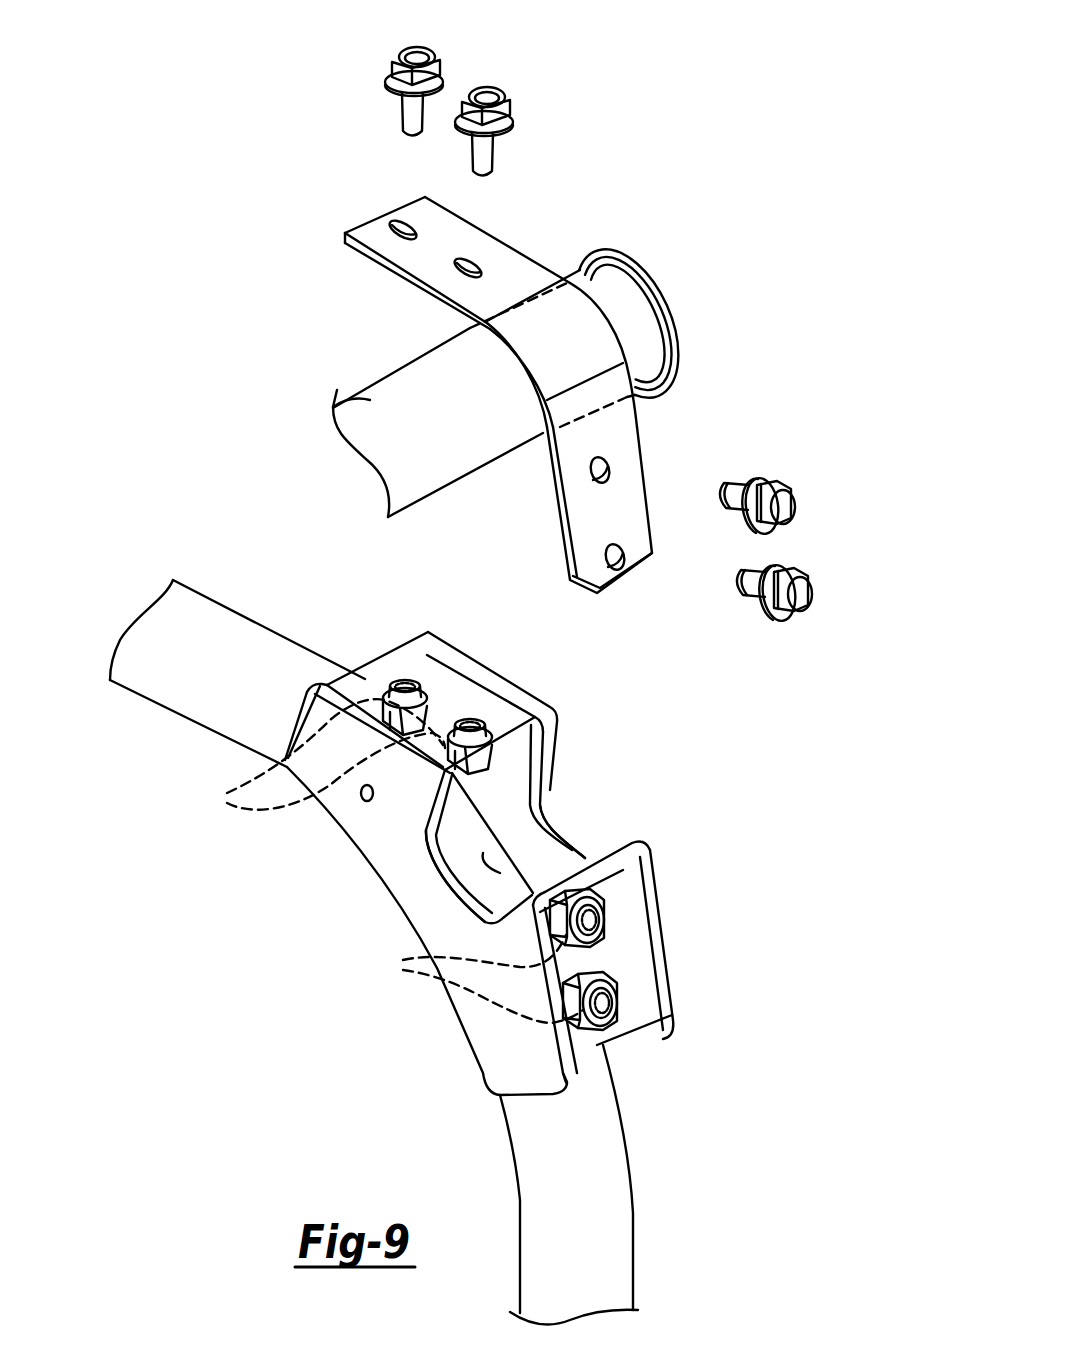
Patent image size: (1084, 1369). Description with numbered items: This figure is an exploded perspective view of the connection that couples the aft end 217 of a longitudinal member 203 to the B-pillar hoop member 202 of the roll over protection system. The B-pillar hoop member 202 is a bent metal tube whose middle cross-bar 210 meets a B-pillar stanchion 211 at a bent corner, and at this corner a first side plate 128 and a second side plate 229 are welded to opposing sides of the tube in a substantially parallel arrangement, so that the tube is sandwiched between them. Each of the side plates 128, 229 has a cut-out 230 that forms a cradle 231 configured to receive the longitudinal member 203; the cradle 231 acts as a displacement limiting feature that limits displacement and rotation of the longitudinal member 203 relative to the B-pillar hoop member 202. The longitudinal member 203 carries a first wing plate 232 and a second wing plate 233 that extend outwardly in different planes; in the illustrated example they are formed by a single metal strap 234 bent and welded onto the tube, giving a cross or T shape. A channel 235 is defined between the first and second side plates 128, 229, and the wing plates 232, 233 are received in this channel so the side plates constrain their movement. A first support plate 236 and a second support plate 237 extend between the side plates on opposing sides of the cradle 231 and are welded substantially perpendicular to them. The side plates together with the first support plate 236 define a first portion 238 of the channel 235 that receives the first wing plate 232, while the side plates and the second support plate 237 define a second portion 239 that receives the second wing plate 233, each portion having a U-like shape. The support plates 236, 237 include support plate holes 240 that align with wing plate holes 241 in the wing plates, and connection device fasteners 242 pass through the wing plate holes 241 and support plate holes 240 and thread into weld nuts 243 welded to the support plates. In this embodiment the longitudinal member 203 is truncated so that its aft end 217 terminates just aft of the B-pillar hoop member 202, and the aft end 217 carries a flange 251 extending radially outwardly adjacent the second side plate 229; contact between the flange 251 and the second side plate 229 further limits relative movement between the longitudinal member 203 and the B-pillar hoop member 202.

The first side plate 128 is at (510, 1037).
The B-pillar hoop member 202 is at (503, 1203).
The longitudinal member 203 is at (334, 408).
The middle cross-bar 210 is at (208, 632).
The B-pillar stanchion 211 is at (620, 1237).
The aft end of longitudinal member 217 is at (603, 283).
The second side plate 229 is at (673, 1018).
The cut-out 230 is at (437, 862).
The cradle 231 is at (612, 755).
The first wing plate 232 is at (520, 272).
The second wing plate 233 is at (623, 420).
The metal strap 234 is at (587, 347).
The channel 235 is at (483, 853).
The first support plate 236 is at (463, 685).
The second support plate 237 is at (627, 955).
The first portion of channel 238 is at (396, 662).
The second portion of channel 239 is at (633, 1052).
The support plate holes 240 is at (408, 686).
The wing plate holes 241 is at (463, 268).
The connection device fasteners 242 is at (483, 97).
The weld nuts 243 is at (386, 861).
The flange 251 is at (677, 353).